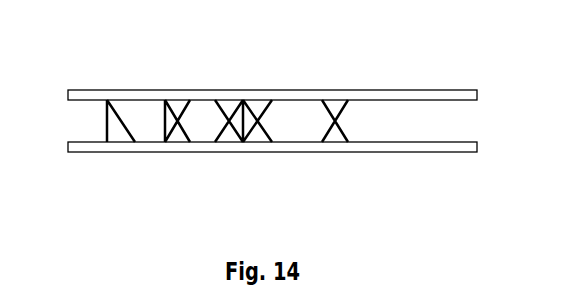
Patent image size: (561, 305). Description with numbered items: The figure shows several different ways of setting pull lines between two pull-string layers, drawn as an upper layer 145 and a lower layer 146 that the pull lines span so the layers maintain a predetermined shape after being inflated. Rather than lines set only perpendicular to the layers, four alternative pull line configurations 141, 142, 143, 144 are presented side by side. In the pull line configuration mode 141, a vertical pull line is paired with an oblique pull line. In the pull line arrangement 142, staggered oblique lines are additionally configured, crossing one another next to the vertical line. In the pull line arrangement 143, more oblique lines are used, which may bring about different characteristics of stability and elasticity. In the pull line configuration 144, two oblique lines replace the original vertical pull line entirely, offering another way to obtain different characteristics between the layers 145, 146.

The pull line configuration mode 141 is at (109, 83).
The pull line arrangement 142 is at (165, 91).
The pull line arrangement 143 is at (238, 92).
The pull line configuration 144 is at (317, 92).
The upper plate 145 is at (83, 88).
The lower plate 146 is at (130, 155).